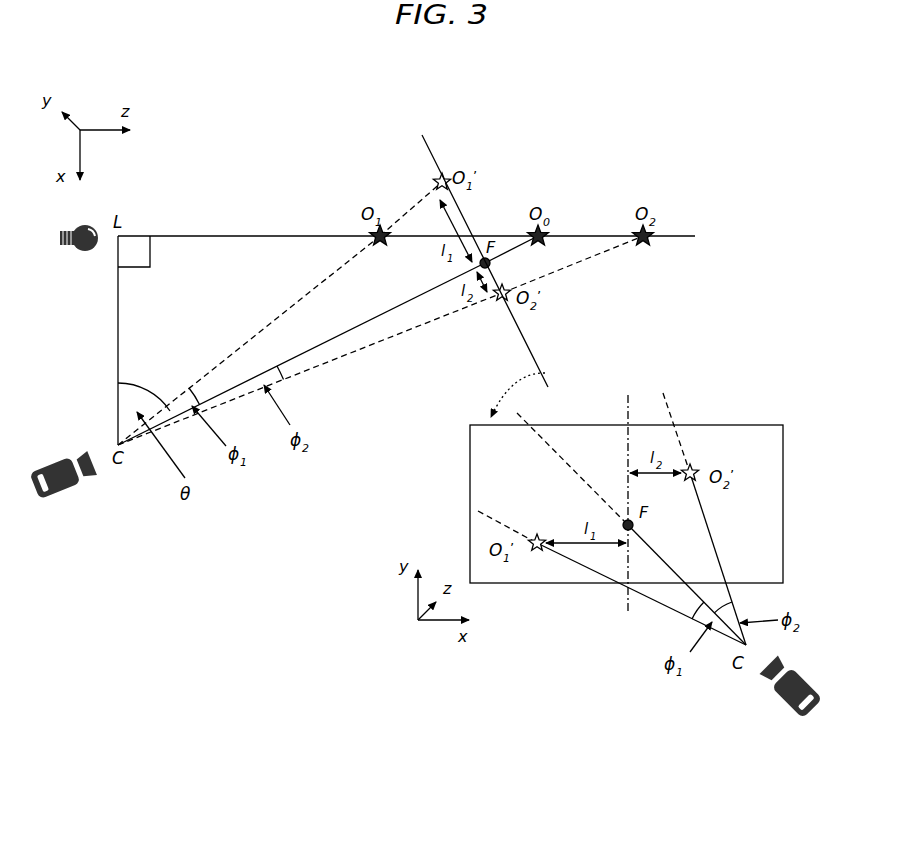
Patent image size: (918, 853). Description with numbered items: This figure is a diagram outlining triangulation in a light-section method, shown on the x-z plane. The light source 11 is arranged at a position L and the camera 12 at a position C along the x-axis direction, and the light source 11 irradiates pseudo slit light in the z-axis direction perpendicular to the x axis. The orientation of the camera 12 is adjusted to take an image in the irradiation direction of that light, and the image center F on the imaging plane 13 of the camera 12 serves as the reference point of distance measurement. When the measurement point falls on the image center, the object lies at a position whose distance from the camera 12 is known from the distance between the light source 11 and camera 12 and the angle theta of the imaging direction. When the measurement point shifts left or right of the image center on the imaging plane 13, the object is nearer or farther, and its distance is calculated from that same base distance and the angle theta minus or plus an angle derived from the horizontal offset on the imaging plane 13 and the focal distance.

The light source 11 is at (56, 251).
The camera 12 is at (48, 453).
The imaging plane 13 is at (530, 342).